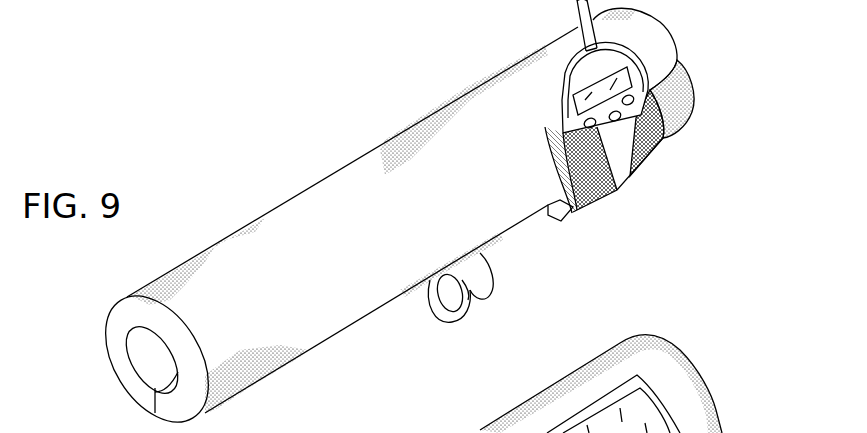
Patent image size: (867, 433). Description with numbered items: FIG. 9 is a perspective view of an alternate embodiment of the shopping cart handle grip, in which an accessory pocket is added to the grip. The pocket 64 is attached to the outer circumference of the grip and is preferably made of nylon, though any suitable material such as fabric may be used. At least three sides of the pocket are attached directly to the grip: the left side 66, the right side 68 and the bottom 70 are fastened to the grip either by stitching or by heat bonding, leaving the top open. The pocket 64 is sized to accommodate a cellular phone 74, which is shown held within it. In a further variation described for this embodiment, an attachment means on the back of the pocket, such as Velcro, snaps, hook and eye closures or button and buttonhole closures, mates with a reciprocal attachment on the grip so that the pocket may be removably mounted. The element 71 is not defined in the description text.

The digital display unit 64 is at (663, 137).
The fastener 66 is at (568, 218).
The housing 68 is at (671, 66).
The collar band 70 is at (617, 190).
The tubular body 71 is at (540, 127).
The stem 74 is at (568, 71).